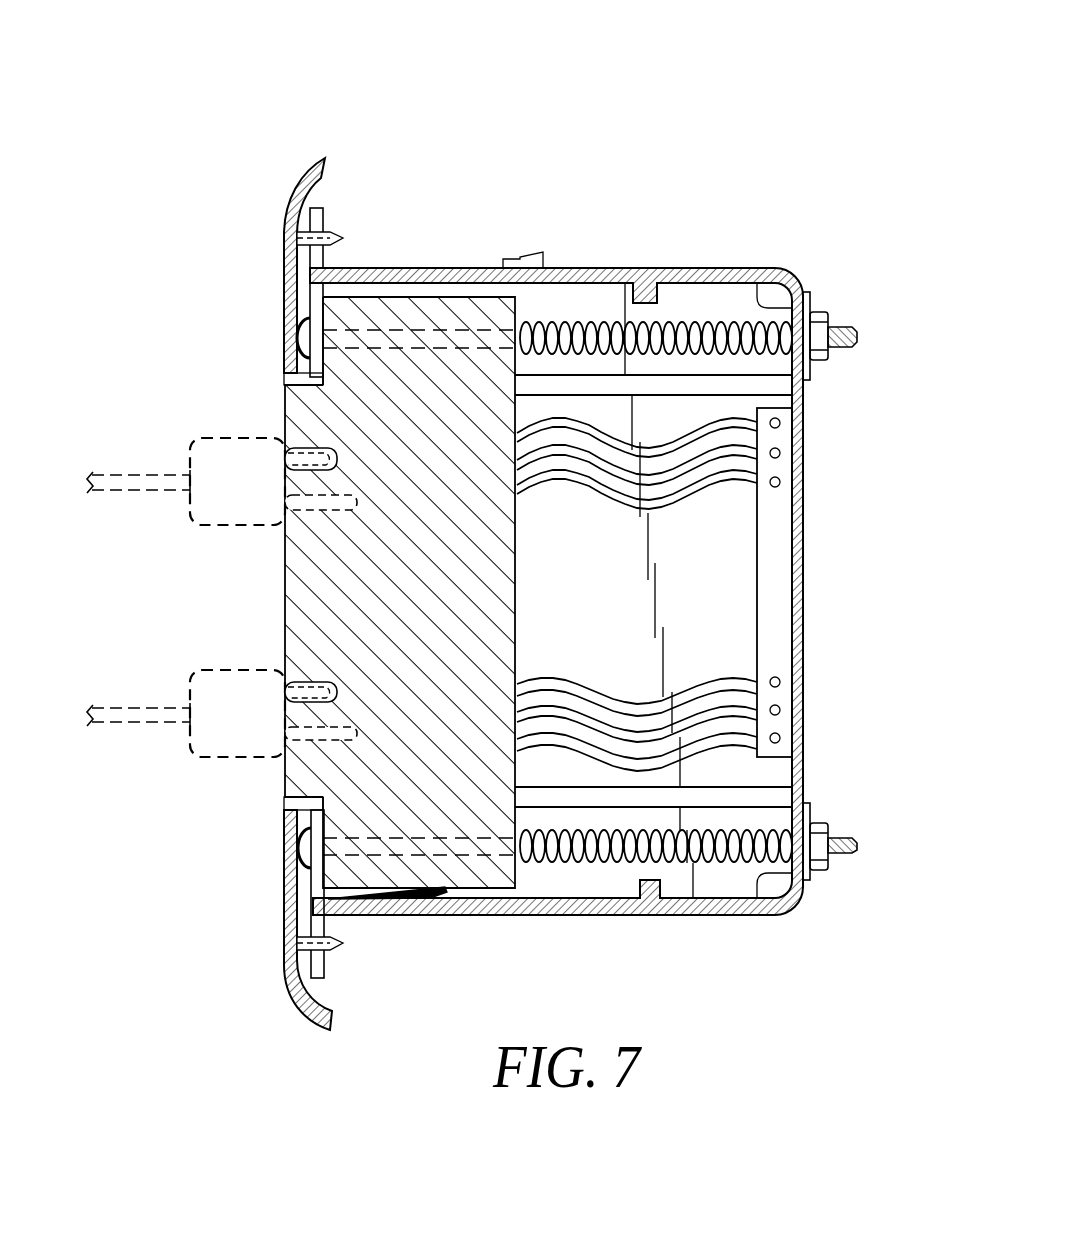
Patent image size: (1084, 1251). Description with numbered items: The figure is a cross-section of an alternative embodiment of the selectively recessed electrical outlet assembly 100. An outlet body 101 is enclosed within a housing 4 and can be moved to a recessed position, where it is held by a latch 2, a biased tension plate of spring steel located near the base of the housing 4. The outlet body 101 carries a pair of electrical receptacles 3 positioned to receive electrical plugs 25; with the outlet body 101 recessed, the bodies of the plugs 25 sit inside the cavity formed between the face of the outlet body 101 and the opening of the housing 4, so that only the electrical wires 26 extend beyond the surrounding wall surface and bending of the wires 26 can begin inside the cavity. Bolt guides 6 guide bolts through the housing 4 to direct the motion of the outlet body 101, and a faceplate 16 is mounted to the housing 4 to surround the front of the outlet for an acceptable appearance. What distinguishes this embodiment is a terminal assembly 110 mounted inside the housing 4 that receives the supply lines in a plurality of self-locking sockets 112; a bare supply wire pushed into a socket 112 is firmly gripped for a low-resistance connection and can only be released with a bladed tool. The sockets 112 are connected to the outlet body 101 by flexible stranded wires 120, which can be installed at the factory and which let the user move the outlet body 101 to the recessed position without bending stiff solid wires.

The electrical outlet assembly 100 is at (562, 148).
The latch 2 is at (397, 903).
The electrical receptacles 3 is at (285, 420).
The housing 4 is at (586, 267).
The bolt guides 6 is at (317, 310).
The faceplate 16 is at (302, 170).
The electrical plugs 25 is at (263, 517).
The electrical wires 26 is at (100, 483).
The outlet body 101 is at (474, 552).
The terminal assembly 110 is at (775, 562).
The sockets 112 is at (780, 423).
The flexible wires 120 is at (536, 485).